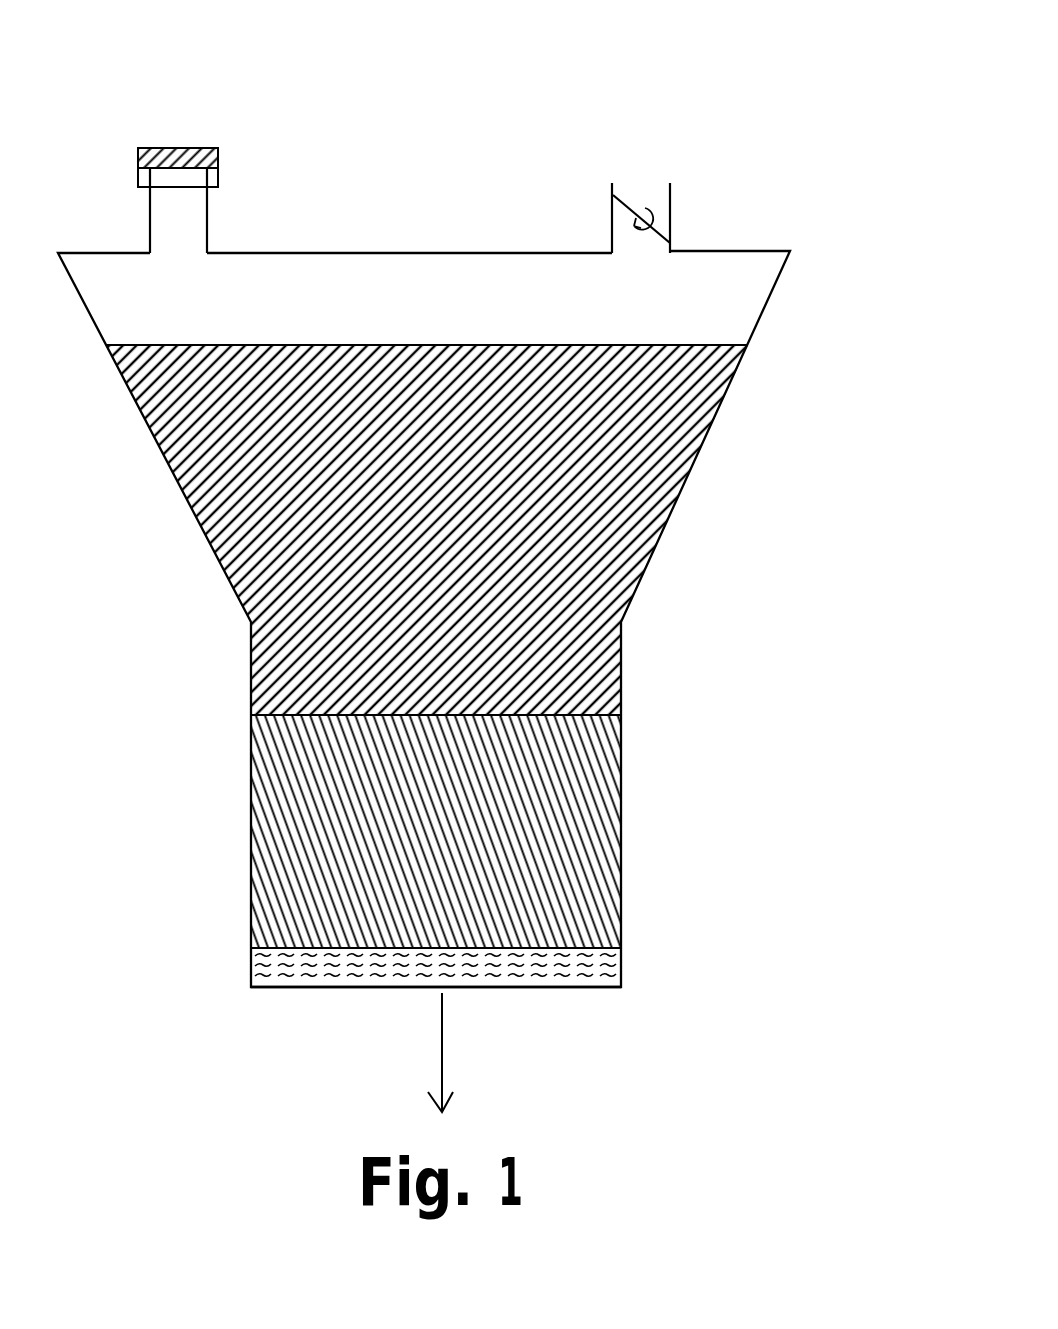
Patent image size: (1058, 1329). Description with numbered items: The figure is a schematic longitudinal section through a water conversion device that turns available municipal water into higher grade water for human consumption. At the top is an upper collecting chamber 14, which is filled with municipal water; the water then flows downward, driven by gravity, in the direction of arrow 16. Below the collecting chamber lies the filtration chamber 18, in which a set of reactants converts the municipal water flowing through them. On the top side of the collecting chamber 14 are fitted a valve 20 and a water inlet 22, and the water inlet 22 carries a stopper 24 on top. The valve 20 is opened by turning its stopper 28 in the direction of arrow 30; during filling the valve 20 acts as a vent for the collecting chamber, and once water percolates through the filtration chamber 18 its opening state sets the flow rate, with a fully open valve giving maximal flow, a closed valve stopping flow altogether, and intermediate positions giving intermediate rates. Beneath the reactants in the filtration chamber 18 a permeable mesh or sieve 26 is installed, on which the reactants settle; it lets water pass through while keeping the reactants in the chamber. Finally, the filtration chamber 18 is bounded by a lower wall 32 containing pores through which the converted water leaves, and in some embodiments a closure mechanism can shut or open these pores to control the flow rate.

The upper collecting chamber 14 is at (676, 500).
The arrow 16 is at (442, 1062).
The filtration chamber 18 is at (621, 823).
The valve 20 is at (698, 210).
The water inlet 22 is at (240, 218).
The stopper 24 is at (152, 148).
The permeable mesh or sieve 26 is at (623, 970).
The stopper 28 is at (629, 200).
The arrow 30 is at (651, 203).
The lower wall 32 is at (282, 989).